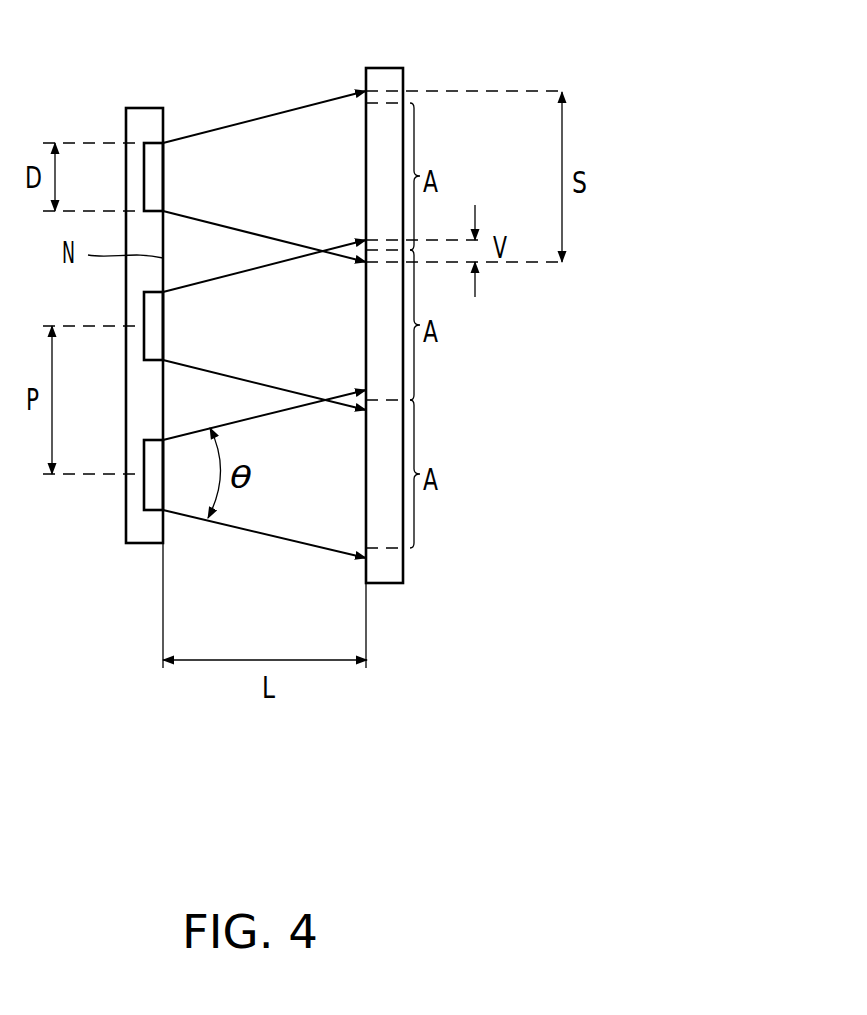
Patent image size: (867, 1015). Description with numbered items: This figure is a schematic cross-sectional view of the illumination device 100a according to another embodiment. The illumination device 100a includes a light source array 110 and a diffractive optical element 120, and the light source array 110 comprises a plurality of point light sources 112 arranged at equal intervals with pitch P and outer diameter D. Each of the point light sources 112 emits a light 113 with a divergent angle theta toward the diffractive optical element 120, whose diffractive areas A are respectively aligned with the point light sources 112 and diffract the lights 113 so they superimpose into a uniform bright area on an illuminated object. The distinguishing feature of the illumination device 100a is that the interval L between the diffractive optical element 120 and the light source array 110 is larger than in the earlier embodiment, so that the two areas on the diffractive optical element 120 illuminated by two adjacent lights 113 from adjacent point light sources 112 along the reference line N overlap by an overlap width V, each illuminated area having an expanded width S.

The illumination device 100a is at (665, 861).
The light source array 110 is at (143, 532).
The point light sources 112 is at (155, 157).
The lights 113 is at (247, 118).
The diffractive optical element 120 is at (388, 80).